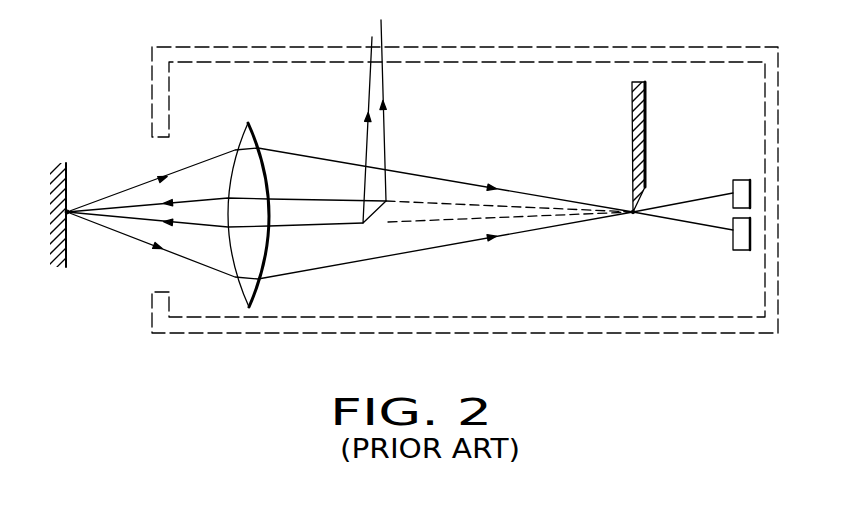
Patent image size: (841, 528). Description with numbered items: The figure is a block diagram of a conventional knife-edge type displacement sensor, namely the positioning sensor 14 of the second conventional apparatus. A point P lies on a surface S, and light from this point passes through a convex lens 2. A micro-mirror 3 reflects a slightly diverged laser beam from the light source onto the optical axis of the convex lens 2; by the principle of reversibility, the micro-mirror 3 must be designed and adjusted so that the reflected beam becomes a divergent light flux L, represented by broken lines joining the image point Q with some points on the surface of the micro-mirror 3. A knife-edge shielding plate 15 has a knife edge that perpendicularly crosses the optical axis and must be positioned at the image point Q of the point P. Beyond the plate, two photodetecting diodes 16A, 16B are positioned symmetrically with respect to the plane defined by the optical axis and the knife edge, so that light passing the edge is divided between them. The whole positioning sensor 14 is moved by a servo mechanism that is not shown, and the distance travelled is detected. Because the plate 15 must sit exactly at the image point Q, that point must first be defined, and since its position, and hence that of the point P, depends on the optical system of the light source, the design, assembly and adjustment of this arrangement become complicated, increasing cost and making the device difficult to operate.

The convex lens 2 is at (269, 253).
The micro-mirror 3 is at (378, 203).
The positioning sensor 14 is at (685, 61).
The knife-edge shielding plate 15 is at (647, 125).
The photodetecting diode 16A is at (738, 179).
The photodetecting diode 16B is at (741, 252).
The surface S is at (68, 167).
The point P is at (69, 215).
The divergent light flux L is at (307, 198).
The image point Q is at (633, 216).